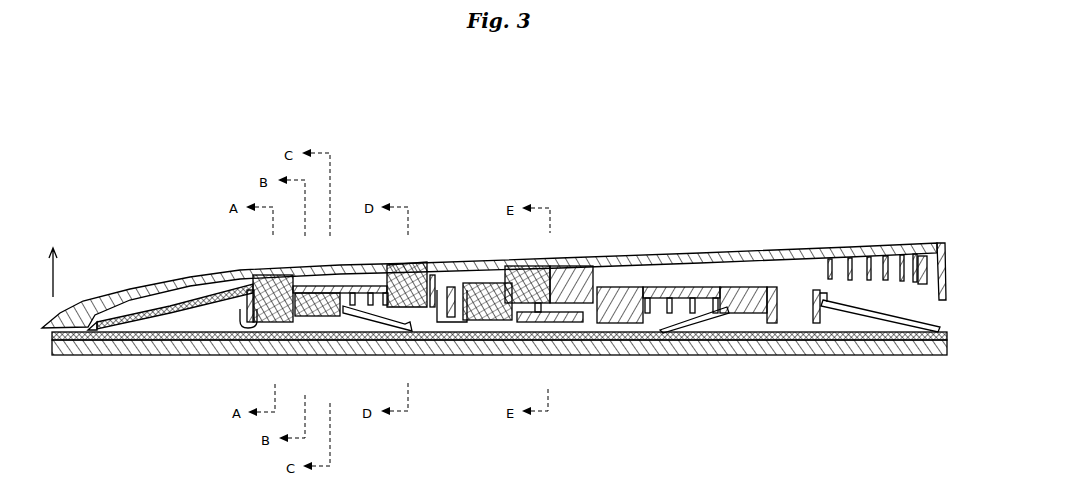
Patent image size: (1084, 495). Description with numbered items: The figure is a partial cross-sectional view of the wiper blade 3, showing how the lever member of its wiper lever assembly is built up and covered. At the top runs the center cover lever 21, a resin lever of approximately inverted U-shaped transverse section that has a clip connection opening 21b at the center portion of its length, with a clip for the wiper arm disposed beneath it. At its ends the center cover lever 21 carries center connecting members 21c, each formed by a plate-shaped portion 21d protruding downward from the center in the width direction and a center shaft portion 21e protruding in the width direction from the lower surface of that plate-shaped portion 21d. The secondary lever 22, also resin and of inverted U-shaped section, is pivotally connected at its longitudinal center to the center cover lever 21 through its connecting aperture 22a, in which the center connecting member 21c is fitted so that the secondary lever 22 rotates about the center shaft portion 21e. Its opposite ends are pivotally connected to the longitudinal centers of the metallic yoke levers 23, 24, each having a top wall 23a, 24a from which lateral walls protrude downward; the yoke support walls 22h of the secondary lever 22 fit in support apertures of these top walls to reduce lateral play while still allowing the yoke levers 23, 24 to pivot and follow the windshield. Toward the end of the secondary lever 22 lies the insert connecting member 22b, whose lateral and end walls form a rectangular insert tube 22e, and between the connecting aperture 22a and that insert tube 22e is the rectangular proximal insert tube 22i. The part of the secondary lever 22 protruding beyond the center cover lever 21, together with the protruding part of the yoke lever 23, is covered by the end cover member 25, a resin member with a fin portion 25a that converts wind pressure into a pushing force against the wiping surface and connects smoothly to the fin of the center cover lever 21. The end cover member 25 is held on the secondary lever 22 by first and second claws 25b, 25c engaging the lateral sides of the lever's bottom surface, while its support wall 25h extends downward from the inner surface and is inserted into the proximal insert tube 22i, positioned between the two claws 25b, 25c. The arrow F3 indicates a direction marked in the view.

The wiper blade 3 is at (675, 218).
The center cover lever 21 is at (786, 252).
The clip connection opening 21b is at (941, 243).
The center connecting member 21c is at (560, 275).
The plate-shaped portion 21d is at (530, 284).
The center shaft portion 21e is at (540, 322).
The secondary lever 22 is at (485, 270).
The connecting aperture 22a is at (611, 265).
The insert connecting member 22b is at (247, 325).
The insert tube 22e is at (300, 330).
The yoke support wall 22h is at (732, 330).
The proximal insert tube 22i is at (437, 270).
The yoke lever 23 is at (196, 298).
The top wall 23a is at (123, 314).
The yoke lever 24 is at (836, 297).
The top wall 24a is at (875, 304).
The end cover member 25 is at (158, 290).
The fin portion 25a is at (270, 330).
The first claw 25b is at (333, 330).
The second claw 25c is at (478, 332).
The support wall 25h is at (440, 330).
The force direction F3 is at (58, 266).